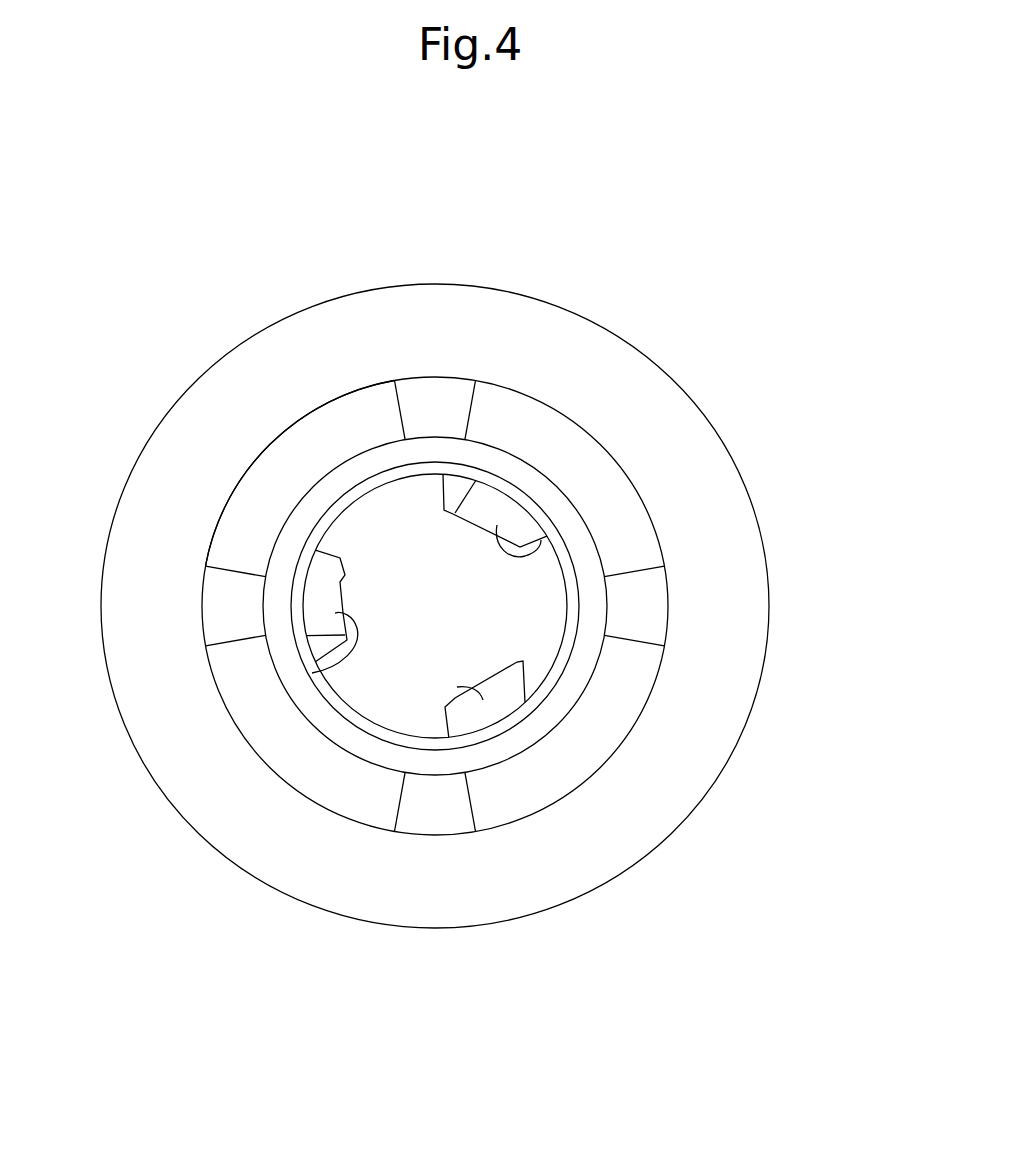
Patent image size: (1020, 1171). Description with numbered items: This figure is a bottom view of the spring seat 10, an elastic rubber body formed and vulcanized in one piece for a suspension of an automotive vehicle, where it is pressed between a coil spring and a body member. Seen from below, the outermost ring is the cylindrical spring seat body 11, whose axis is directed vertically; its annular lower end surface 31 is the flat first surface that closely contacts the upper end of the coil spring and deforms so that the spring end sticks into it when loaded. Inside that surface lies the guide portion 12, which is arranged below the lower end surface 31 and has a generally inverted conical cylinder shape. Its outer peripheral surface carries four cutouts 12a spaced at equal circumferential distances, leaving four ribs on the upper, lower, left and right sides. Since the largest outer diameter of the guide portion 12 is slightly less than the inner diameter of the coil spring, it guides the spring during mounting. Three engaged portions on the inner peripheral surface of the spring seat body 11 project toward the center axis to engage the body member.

The spring seat 10 is at (667, 330).
The spring seat body 11 is at (717, 517).
The guide portion 12 is at (583, 663).
The cutout 12a is at (323, 443).
The lower end surface 31 is at (717, 613).